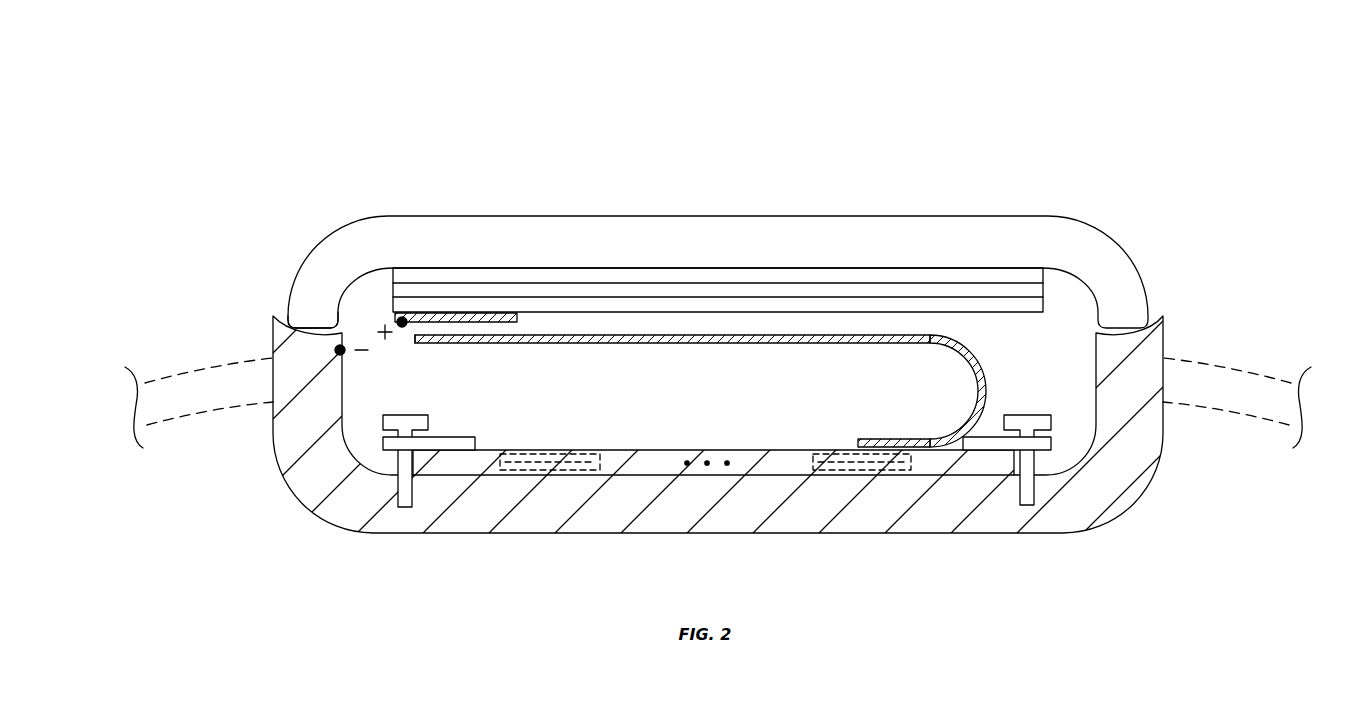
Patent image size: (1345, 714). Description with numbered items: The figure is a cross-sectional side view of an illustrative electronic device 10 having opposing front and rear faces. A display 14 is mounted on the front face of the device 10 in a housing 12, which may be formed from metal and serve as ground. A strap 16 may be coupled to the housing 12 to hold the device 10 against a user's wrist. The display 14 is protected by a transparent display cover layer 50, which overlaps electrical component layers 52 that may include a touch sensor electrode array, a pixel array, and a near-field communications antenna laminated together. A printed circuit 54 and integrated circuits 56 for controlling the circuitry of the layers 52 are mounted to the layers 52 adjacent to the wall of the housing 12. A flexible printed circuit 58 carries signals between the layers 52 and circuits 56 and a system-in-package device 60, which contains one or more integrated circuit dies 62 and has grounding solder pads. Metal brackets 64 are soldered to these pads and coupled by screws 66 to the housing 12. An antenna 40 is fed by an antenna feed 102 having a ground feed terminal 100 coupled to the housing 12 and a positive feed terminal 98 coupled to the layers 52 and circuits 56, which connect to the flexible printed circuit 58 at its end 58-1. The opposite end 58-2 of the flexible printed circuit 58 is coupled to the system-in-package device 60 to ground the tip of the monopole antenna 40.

The electronic device 10 is at (1184, 75).
The housing 12 is at (1077, 513).
The display 14 is at (964, 169).
The strap 16 is at (168, 385).
The antenna 40 is at (693, 246).
The display cover layer 50 is at (547, 223).
The electrical component layers 52 is at (870, 304).
The printed circuit 54 is at (505, 318).
The integrated circuits 56 is at (412, 337).
The flexible printed circuit 58 is at (602, 346).
The end of flexible printed circuit 58-1 is at (496, 350).
The end of flexible printed circuit 58-2 is at (888, 426).
The system-in-package device 60 is at (738, 466).
The integrated circuit dies 62 is at (522, 465).
The metal brackets 64 is at (458, 437).
The screws 66 is at (414, 415).
The positive feed terminal 98 is at (397, 320).
The ground feed terminal 100 is at (335, 349).
The antenna feed 102 is at (362, 300).